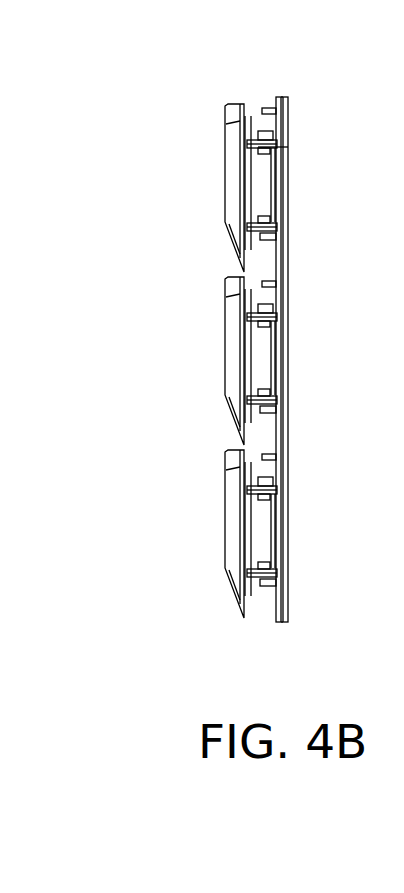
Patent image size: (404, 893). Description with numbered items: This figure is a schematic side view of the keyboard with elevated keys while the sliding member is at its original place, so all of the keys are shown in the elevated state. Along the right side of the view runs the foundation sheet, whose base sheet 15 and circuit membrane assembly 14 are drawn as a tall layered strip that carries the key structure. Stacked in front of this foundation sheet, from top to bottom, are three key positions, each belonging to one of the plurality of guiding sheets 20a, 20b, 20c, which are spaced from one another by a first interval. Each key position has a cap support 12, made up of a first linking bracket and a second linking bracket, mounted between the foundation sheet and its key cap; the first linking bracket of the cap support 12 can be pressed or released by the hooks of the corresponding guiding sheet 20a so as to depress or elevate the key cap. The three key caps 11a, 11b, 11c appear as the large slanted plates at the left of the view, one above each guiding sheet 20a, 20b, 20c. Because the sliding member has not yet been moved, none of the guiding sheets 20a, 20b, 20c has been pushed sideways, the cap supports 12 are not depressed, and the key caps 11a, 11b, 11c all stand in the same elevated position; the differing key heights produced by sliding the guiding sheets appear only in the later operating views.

The key cap 11a is at (236, 178).
The key cap 11b is at (236, 373).
The key cap 11c is at (236, 550).
The cap support 12 is at (282, 147).
The circuit membrane assembly 14 is at (281, 97).
The base sheet 15 is at (284, 107).
The guiding sheet 20a is at (278, 112).
The guiding sheet 20b is at (278, 300).
The guiding sheet 20c is at (278, 473).